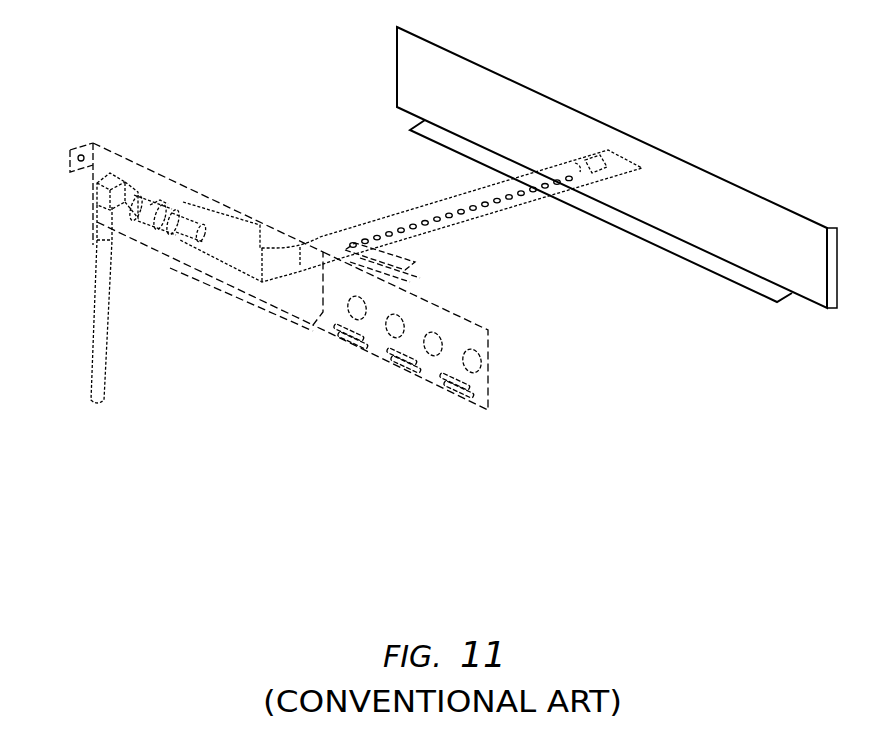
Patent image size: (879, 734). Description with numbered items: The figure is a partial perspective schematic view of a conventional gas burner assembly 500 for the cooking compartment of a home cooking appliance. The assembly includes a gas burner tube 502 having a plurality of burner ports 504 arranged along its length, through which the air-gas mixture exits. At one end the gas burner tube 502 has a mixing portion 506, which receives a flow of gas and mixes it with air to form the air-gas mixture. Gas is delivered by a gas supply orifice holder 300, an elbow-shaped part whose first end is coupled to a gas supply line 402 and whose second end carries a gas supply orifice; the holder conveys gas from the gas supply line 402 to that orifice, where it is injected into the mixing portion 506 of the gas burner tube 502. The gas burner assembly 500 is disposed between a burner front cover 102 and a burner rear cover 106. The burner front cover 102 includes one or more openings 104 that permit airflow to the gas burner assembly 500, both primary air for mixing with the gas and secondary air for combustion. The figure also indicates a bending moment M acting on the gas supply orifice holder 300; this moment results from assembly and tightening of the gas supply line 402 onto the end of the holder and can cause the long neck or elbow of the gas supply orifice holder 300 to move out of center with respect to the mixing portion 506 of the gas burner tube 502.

The burner front cover 102 is at (373, 352).
The openings 104 is at (480, 328).
The burner rear cover 106 is at (515, 82).
The gas supply orifice holder 300 is at (86, 194).
The gas supply line 402 is at (97, 230).
The gas burner assembly 500 is at (411, 209).
The gas burner tube 502 is at (468, 221).
The burner ports 504 is at (510, 198).
The mixing portion 506 is at (122, 250).
The bending moment M is at (97, 262).